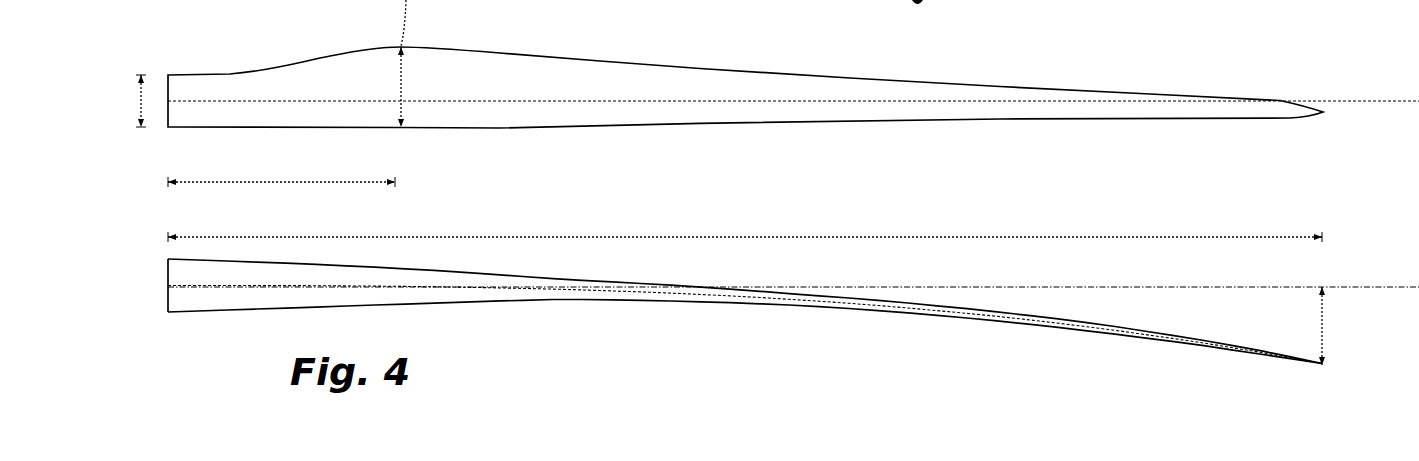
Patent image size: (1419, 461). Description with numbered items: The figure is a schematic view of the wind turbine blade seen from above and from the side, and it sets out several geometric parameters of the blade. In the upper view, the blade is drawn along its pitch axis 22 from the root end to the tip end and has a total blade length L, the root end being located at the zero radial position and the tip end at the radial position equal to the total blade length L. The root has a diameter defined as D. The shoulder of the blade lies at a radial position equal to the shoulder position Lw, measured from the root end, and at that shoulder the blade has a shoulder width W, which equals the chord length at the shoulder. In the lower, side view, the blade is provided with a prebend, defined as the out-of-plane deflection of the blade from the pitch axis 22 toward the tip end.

The pitch axis 22 is at (626, 101).
The root diameter D is at (132, 101).
The shoulder width W is at (413, 87).
The shoulder position Lw is at (281, 170).
The total blade length L is at (745, 226).